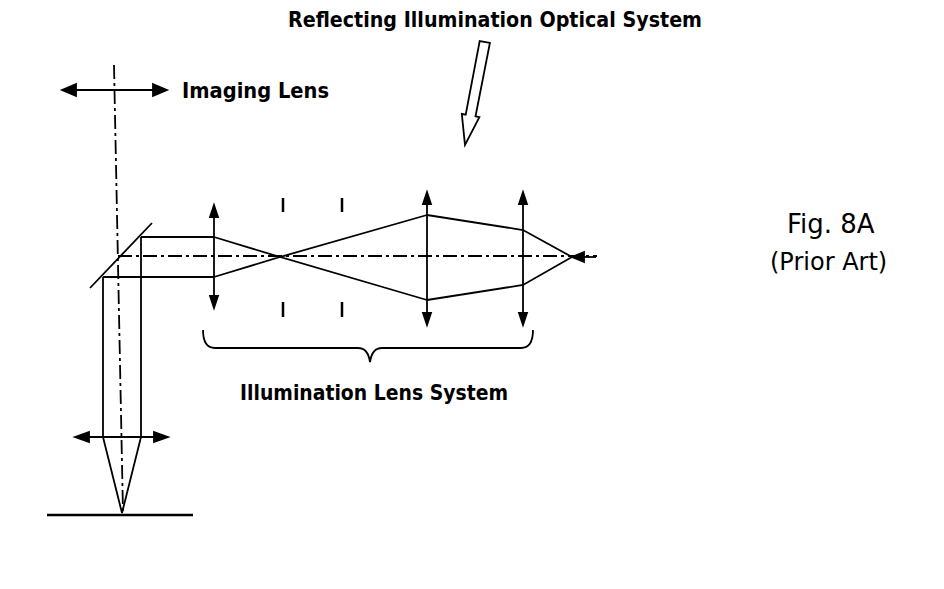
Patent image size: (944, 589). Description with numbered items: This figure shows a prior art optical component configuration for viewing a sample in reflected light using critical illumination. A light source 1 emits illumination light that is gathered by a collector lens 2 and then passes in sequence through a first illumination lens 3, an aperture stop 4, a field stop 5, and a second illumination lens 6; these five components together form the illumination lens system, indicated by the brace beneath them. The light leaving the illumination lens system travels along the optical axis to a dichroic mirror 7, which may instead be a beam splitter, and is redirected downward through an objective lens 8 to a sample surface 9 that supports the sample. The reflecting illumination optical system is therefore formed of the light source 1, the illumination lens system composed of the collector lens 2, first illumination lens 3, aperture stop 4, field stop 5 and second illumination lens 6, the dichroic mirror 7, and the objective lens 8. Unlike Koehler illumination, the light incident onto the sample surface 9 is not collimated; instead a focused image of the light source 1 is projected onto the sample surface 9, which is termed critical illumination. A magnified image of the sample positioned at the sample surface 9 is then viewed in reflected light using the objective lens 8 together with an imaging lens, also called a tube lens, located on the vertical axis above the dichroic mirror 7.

The light source 1 is at (573, 254).
The collector lens 2 is at (522, 220).
The first illumination lens 3 is at (423, 211).
The aperture stop 4 is at (340, 203).
The field stop 5 is at (282, 203).
The second illumination lens 6 is at (212, 222).
The dichroic mirror 7 is at (115, 266).
The objective lens 8 is at (147, 437).
The sample surface 9 is at (156, 513).